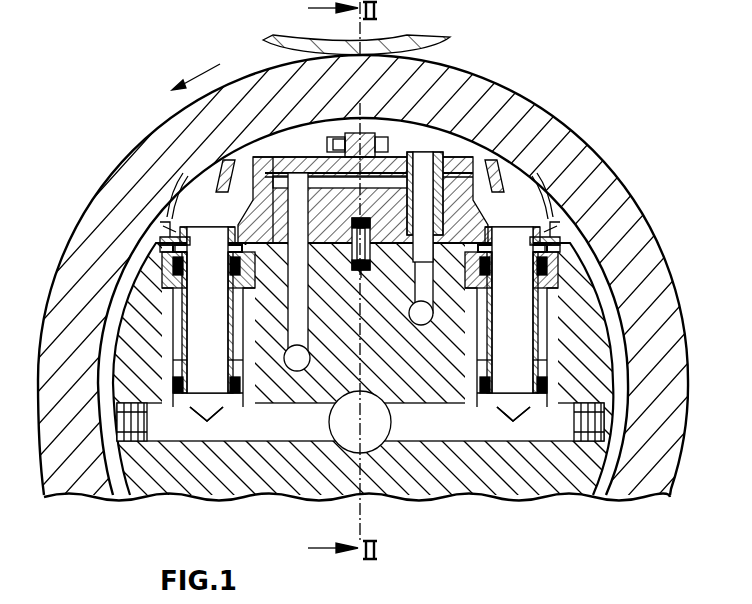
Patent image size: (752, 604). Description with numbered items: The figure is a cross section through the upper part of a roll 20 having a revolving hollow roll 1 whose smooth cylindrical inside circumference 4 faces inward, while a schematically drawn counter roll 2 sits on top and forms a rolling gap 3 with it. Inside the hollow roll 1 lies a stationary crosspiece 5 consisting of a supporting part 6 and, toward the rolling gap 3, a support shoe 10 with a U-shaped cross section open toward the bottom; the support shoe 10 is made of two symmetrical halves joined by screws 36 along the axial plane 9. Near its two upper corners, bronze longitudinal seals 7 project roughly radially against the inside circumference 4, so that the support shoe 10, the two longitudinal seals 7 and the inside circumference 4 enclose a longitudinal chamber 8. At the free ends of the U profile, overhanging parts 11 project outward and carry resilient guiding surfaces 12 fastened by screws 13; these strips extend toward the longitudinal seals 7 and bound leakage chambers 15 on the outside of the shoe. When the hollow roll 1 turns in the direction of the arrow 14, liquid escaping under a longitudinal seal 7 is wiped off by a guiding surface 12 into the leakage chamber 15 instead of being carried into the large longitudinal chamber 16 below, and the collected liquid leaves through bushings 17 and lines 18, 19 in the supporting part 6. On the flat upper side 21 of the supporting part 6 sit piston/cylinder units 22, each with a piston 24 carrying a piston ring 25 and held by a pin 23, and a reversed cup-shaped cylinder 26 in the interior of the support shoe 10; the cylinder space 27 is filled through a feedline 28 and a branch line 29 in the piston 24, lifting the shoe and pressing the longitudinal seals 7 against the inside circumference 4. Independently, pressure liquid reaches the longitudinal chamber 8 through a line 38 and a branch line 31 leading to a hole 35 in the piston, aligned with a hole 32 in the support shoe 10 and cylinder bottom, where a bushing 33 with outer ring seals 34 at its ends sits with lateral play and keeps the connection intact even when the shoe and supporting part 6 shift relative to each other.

The hollow roll 1 is at (590, 178).
The counter roll 2 is at (412, 33).
The rolling gap 3 is at (284, 58).
The inside circumference 4 is at (618, 242).
The crosspiece 5 is at (625, 272).
The supporting part 6 is at (592, 278).
The longitudinal seals 7 is at (218, 172).
The longitudinal chamber 8 is at (455, 140).
The axial plane 9 is at (395, 428).
The support shoe 10 is at (478, 155).
The overhanging parts 11 is at (160, 232).
The guiding surfaces 12 is at (172, 212).
The screws 13 is at (166, 222).
The arrow 14 is at (200, 75).
The leakage chamber 15 is at (190, 198).
The longitudinal chamber 16 is at (110, 447).
The bushings 17 is at (230, 362).
The line 18 is at (456, 422).
The line 19 is at (343, 446).
The roll 20 is at (532, 86).
The upper side 21 is at (155, 241).
The piston/cylinder units 22 is at (278, 254).
The pin 23 is at (370, 273).
The piston 24 is at (345, 248).
The piston rings 25 is at (293, 163).
The cylinder 26 is at (268, 165).
The cylinder space 27 is at (318, 158).
The feedline 28 is at (305, 362).
The branch line 29 is at (300, 312).
The branch line 31 is at (422, 285).
The hole 32 is at (417, 158).
The bushing 33 is at (445, 160).
The outer ring seals 34 is at (188, 383).
The hole 35 is at (371, 251).
The screws 36 is at (380, 140).
The line 38 is at (424, 326).